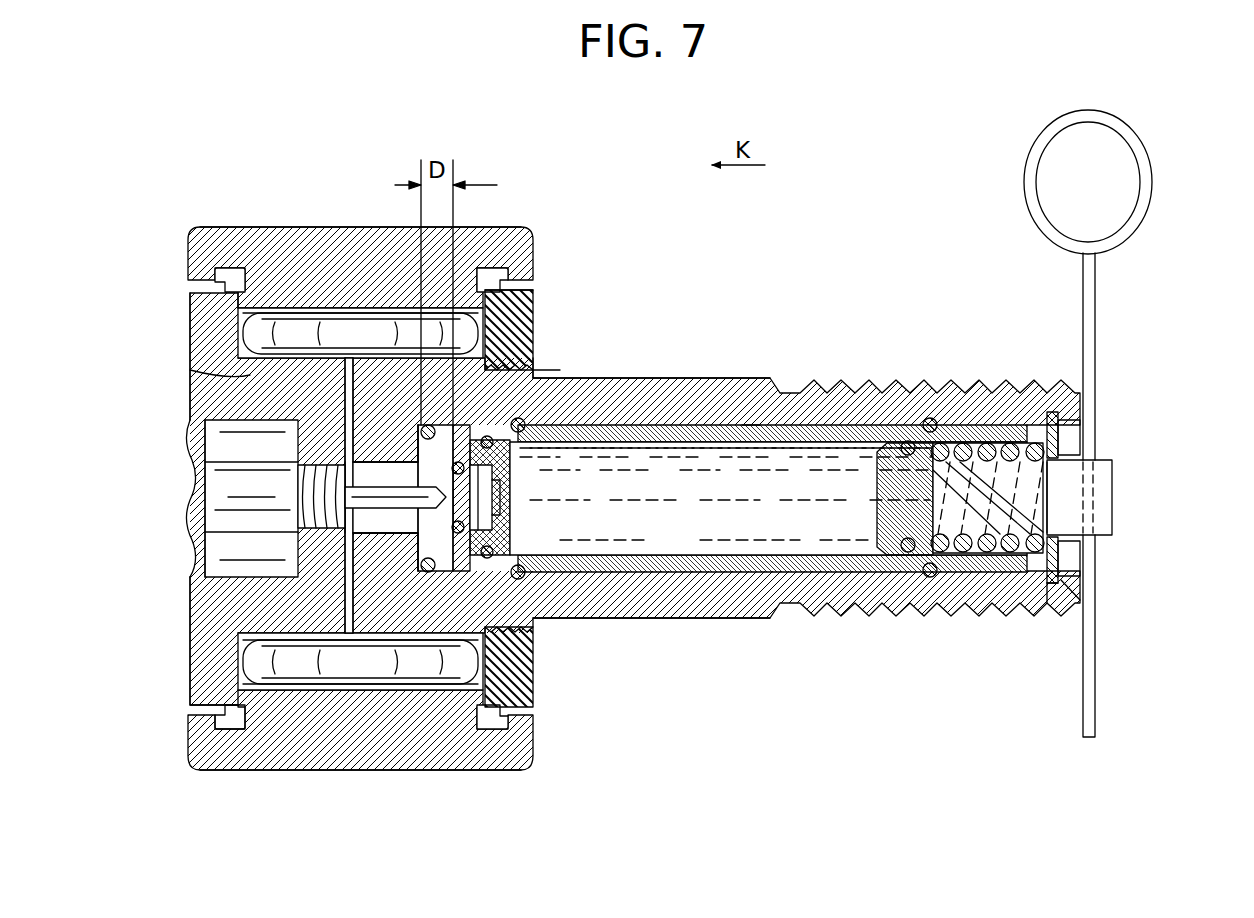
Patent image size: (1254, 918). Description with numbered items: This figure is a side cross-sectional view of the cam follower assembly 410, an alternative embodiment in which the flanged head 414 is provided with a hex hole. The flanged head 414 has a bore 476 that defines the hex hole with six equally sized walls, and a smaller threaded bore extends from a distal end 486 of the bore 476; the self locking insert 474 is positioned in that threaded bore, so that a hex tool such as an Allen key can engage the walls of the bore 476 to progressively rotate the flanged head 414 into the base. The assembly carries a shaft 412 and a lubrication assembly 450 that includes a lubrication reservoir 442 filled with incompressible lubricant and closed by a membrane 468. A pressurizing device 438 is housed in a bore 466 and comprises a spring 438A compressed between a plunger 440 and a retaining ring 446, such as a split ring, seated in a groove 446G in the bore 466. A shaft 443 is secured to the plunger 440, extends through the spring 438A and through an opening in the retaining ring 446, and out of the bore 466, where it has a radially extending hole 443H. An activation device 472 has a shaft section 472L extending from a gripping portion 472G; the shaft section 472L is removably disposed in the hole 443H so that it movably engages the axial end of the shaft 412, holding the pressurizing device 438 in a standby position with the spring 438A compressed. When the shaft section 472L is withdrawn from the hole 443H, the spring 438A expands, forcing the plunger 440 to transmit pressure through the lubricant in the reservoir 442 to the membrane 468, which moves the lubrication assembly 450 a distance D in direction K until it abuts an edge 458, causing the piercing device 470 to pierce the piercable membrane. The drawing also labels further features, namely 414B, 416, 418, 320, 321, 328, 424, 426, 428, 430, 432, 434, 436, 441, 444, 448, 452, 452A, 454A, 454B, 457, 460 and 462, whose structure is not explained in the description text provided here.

The cam follower assembly 410 is at (655, 234).
The shaft 412 is at (415, 545).
The flanged head 414 is at (188, 340).
The housing shoulder 414B is at (240, 299).
The cylinder portion 416 is at (533, 317).
The housing base 418 is at (235, 760).
The seal groove 320 is at (533, 369).
The seal ring seat 321 is at (533, 341).
The roller surface 328 is at (366, 318).
The end cap 424 is at (232, 232).
The end cap outer surface 426 is at (312, 227).
The roller race 428 is at (415, 680).
The housing bore 430 is at (252, 372).
The roller 432 is at (288, 318).
The adjustment screw 434 is at (325, 541).
The roller axle 436 is at (345, 645).
The pressurizing device 438 is at (958, 555).
The spring 438A is at (1040, 469).
The plunger 440 is at (917, 530).
The fluid chamber line 441 is at (752, 445).
The lubrication reservoir 442 is at (533, 350).
The shaft 443 is at (1115, 467).
The hole 443H is at (1090, 520).
The valve seal 444 is at (500, 470).
The retaining ring 446 is at (1056, 440).
The groove 446G is at (1060, 590).
The fluid passage 448 is at (742, 425).
The lubrication assembly 450 is at (993, 724).
The seal ring 452 is at (535, 307).
The seal ring face 452A is at (522, 290).
The retaining clip 454A is at (528, 250).
The retaining clip 454B is at (222, 283).
The end chamfer 457 is at (1082, 598).
The edge 458 is at (525, 682).
The cylinder wall 460 is at (655, 373).
The flange seat 462 is at (1058, 600).
The bore 466 is at (1070, 454).
The membrane 468 is at (470, 545).
The piercing device 470 is at (348, 626).
The activation device 472 is at (1150, 105).
The gripping portion 472G is at (1030, 170).
The shaft section 472L is at (1097, 292).
The self locking insert 474 is at (300, 483).
The bore 476 is at (240, 506).
The distal end 486 is at (350, 542).